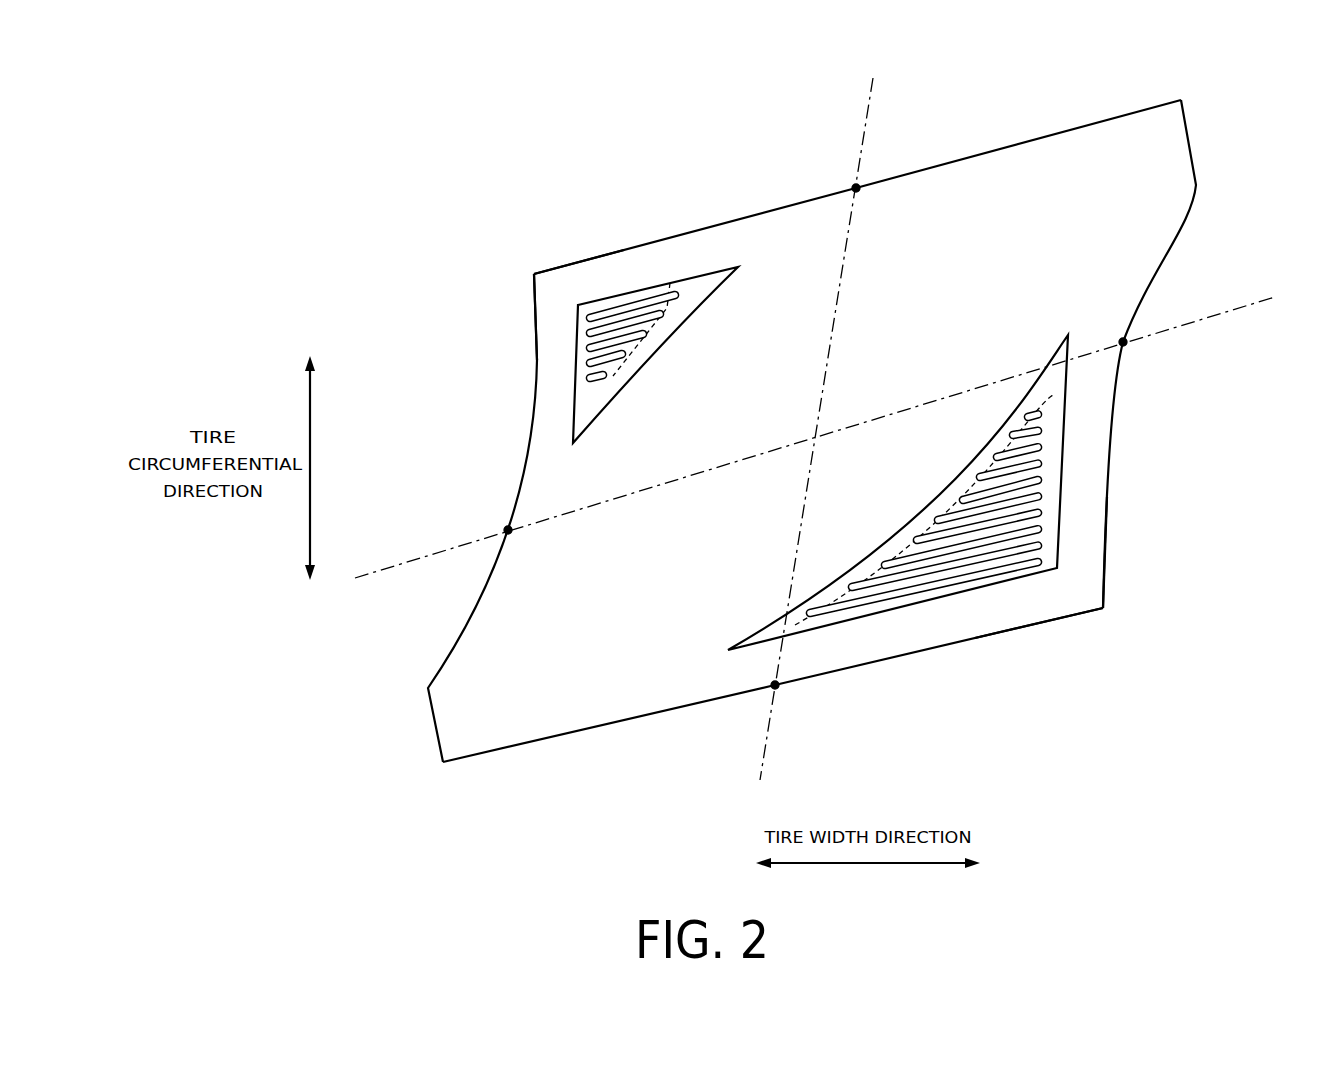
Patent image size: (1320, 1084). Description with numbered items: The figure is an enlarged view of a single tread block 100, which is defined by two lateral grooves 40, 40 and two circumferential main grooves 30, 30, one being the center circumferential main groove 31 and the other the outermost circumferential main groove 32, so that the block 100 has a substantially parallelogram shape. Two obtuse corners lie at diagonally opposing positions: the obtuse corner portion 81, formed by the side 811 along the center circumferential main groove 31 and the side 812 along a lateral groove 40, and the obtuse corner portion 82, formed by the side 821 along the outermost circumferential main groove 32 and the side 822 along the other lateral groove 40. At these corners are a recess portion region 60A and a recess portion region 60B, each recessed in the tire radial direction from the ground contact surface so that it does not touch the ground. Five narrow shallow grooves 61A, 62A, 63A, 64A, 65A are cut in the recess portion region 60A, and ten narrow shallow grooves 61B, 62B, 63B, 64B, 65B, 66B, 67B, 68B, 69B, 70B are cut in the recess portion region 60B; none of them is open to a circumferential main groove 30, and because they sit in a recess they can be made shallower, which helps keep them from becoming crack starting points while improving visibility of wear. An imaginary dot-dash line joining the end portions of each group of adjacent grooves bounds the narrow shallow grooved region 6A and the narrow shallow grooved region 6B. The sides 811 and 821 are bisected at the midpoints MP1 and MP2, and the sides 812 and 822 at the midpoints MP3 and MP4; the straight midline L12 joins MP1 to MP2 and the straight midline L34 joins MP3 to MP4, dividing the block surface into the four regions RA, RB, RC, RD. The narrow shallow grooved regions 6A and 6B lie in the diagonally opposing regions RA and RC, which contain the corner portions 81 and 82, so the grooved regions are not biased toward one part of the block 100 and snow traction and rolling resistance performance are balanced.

The block 100 is at (656, 84).
The lateral groove 40 is at (542, 268).
The circumferential main groove 30 is at (818, 406).
The center circumferential main groove 31 is at (530, 274).
The outermost circumferential main groove 32 is at (1183, 99).
The region RA is at (746, 230).
The region RB is at (1007, 168).
The region RC is at (985, 634).
The region RD is at (628, 722).
The obtuse corner portion 81 is at (588, 275).
The side 811 is at (533, 288).
The side 812 is at (624, 250).
The obtuse corner portion 82 is at (1072, 603).
The side 821 is at (1076, 606).
The side 822 is at (1030, 636).
The recess portion region 60A is at (699, 277).
The recess portion region 60B is at (803, 635).
The narrow shallow grooved region 6A is at (670, 283).
The narrow shallow grooved region 6B is at (1052, 398).
The narrow shallow groove 61A is at (589, 318).
The narrow shallow groove 62A is at (589, 333).
The narrow shallow groove 63A is at (589, 348).
The narrow shallow groove 64A is at (589, 363).
The narrow shallow groove 65A is at (589, 378).
The narrow shallow groove 61B is at (1042, 562).
The narrow shallow groove 62B is at (1042, 546).
The narrow shallow groove 63B is at (1042, 529).
The narrow shallow groove 64B is at (1042, 513).
The narrow shallow groove 65B is at (1042, 496).
The narrow shallow groove 66B is at (1042, 480).
The narrow shallow groove 67B is at (1042, 464).
The narrow shallow groove 68B is at (1042, 447).
The narrow shallow groove 69B is at (1042, 431).
The narrow shallow groove 70B is at (1042, 414).
The midpoint MP1 is at (506, 528).
The midpoint MP2 is at (1127, 344).
The midpoint MP3 is at (853, 187).
The midpoint MP4 is at (778, 689).
The midline L12 is at (1248, 299).
The midline L34 is at (870, 118).